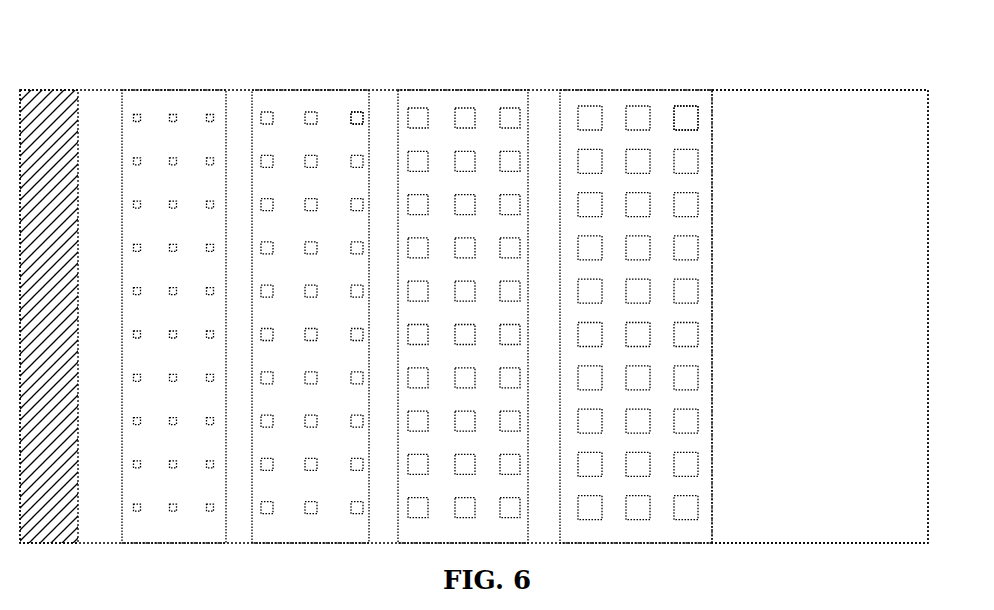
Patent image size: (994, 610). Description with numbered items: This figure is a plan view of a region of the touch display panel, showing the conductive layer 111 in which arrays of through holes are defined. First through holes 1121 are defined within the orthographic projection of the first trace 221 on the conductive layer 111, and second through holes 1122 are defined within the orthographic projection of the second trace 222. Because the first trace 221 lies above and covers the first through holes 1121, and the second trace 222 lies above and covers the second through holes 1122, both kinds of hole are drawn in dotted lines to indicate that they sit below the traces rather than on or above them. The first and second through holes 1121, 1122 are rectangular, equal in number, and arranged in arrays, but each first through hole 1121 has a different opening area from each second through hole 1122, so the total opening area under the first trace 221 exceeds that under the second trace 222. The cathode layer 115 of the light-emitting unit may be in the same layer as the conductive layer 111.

The cathode layer 115 is at (44, 110).
The second trace 222 is at (290, 107).
The second through hole 1122 is at (357, 114).
The first trace 221 is at (612, 105).
The first through hole 1121 is at (686, 110).
The conductive layer 111 is at (792, 120).